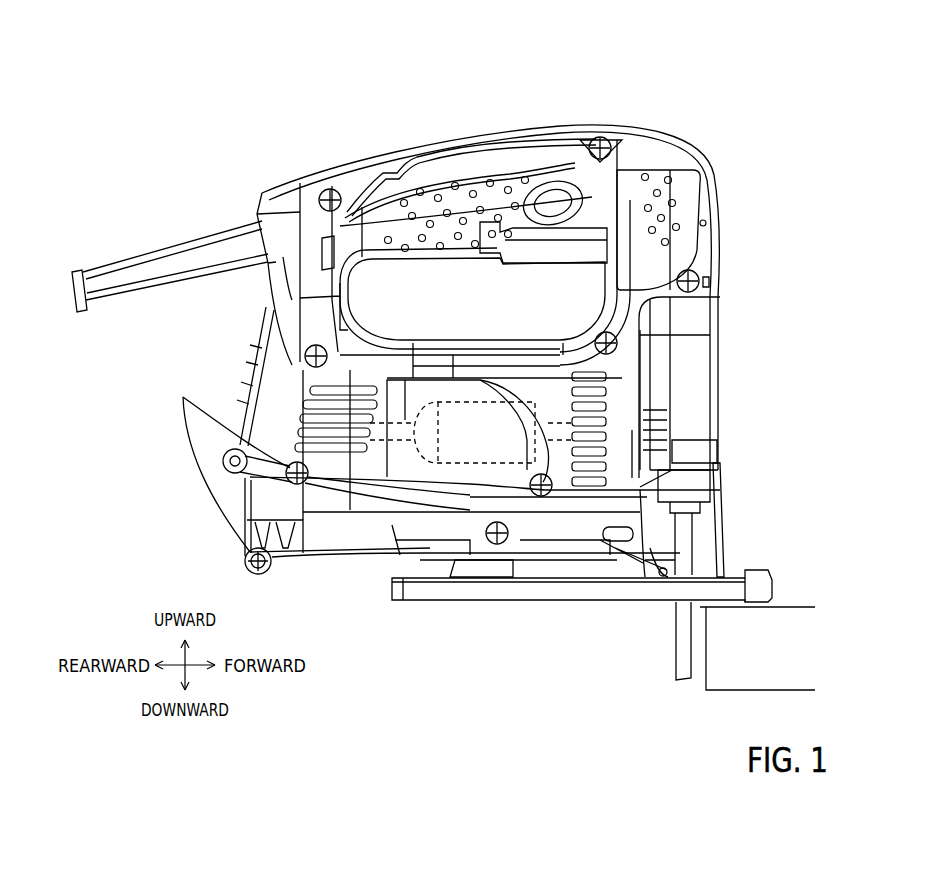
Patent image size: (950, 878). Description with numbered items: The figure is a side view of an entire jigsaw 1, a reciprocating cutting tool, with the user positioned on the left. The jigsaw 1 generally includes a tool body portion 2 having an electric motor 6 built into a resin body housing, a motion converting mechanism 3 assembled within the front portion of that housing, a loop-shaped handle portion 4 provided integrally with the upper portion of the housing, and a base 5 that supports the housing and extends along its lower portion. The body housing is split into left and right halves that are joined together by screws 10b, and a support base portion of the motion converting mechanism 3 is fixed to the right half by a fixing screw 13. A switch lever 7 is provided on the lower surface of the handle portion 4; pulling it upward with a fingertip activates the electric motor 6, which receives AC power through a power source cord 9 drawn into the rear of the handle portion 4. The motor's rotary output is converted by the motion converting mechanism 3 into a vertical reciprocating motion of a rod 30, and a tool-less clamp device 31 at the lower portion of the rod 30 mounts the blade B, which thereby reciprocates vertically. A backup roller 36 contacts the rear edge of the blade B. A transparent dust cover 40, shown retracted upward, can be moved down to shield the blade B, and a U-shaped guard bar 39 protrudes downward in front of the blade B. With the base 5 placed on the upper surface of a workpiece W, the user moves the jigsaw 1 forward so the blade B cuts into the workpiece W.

The jigsaw 1 is at (519, 71).
The tool body portion 2 is at (407, 449).
The motion converting mechanism 3 is at (700, 420).
The handle portion 4 is at (440, 160).
The base 5 is at (537, 600).
The electric motor 6 is at (452, 452).
The switch lever 7 is at (556, 250).
The power source cord 9 is at (205, 252).
The screws 10b is at (316, 185).
The fixing screw 13 is at (620, 340).
The rod 30 is at (700, 492).
The clamp device 31 is at (683, 544).
The backup roller 36 is at (680, 563).
The guard bar 39 is at (722, 518).
The dust cover 40 is at (695, 375).
The blade B is at (682, 645).
The workpiece W is at (787, 622).